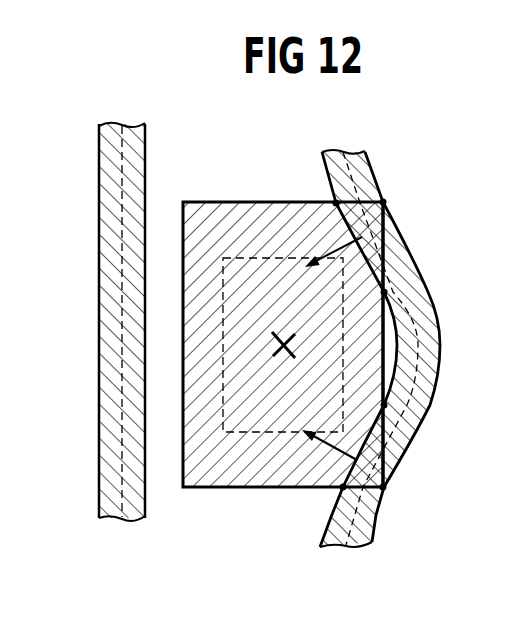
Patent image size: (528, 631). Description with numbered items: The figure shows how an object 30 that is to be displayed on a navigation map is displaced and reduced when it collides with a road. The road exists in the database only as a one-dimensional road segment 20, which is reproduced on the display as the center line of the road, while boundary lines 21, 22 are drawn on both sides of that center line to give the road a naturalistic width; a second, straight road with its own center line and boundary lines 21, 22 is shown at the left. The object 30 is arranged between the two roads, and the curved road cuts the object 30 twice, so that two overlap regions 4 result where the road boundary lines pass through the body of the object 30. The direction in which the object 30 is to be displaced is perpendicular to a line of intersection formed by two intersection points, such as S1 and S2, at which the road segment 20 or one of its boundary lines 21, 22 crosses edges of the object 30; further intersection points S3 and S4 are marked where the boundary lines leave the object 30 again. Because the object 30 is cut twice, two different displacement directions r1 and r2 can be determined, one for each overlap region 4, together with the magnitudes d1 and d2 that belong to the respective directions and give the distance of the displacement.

The overlap region 4 is at (378, 222).
The road segment 20 is at (121, 150).
The boundary line 21 is at (145, 495).
The boundary line 22 is at (100, 495).
The object 30 is at (217, 165).
The intersection point S1 is at (326, 198).
The intersection point S2 is at (387, 292).
The third contact point S3 is at (385, 405).
The fourth contact point S4 is at (343, 487).
The magnitude of displacement d1 is at (381, 200).
The magnitude of displacement d2 is at (384, 487).
The displacement direction r1 is at (345, 244).
The displacement direction r2 is at (343, 457).